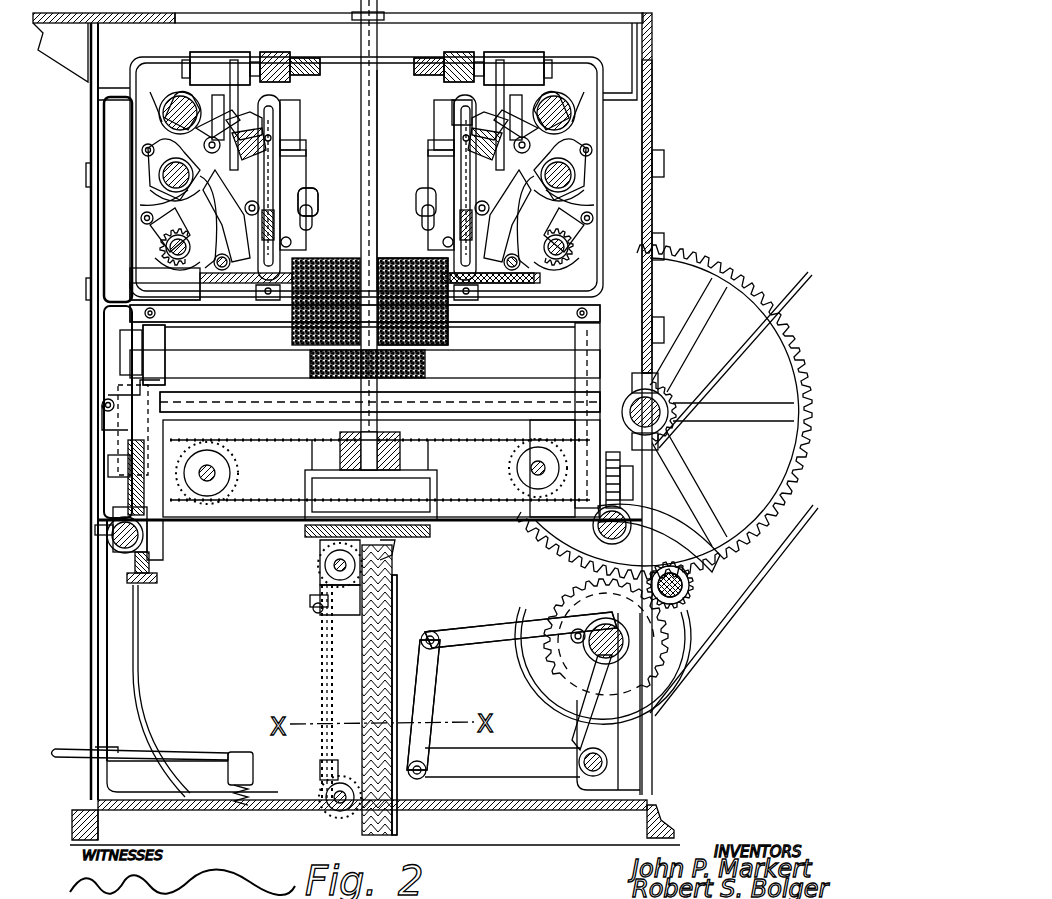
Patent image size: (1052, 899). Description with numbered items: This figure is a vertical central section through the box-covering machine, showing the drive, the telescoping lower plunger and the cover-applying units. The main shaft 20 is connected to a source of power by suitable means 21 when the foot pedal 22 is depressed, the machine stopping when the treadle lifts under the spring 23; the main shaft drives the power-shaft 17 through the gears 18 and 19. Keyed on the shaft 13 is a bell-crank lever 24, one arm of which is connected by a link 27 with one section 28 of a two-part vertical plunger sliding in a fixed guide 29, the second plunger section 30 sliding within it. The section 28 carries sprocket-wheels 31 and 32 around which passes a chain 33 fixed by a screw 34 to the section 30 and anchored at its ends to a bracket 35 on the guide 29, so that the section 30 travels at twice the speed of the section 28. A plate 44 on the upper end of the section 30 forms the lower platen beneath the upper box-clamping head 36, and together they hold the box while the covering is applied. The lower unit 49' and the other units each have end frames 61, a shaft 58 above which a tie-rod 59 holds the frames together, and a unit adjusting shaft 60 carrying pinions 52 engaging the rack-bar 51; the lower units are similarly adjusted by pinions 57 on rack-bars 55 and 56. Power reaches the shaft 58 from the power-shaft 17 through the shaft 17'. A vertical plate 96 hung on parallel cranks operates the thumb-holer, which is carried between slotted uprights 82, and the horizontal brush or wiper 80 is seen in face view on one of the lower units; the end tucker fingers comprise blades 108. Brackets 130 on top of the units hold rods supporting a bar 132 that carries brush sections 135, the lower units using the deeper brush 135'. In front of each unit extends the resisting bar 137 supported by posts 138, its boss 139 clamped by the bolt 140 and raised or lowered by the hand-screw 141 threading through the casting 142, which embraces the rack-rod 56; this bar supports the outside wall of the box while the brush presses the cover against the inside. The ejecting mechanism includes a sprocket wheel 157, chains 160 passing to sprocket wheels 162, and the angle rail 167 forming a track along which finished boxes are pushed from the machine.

The brackets 130 is at (228, 62).
The bar 132 is at (278, 53).
The brush sections 135 is at (367, 52).
The tie-rod 59 is at (172, 98).
The shaft 58 is at (168, 175).
The vertical plate 96 is at (190, 193).
The pinions 52 is at (152, 245).
The unit adjusting shaft 60 is at (180, 258).
The rack-bar 51 is at (165, 296).
The resisting bar 137 is at (306, 150).
The slotted uprights 82 is at (304, 197).
The end tucker blades 108 is at (306, 220).
The end frame 61 is at (290, 243).
The shaft 17' is at (400, 180).
The lower unit brush 135' is at (413, 290).
The power-shaft 17 is at (679, 390).
The gear 18 is at (795, 460).
The horizontal brush or wiper 80 is at (412, 365).
The lower cover-applying unit 49' is at (104, 355).
The bolt 140 is at (106, 400).
The boss 139 is at (133, 437).
The posts 138 is at (130, 470).
The rack-bar 56 is at (122, 538).
The casting 142 is at (150, 541).
The hand-screw 141 is at (143, 565).
The box-clamping head 36 is at (312, 450).
The sprocket wheel 157 is at (235, 483).
The chains 160 is at (440, 436).
The sprocket wheel 162 is at (512, 482).
The angle rail 167 is at (465, 522).
The pinions 57 is at (632, 514).
The rack-bar 55 is at (628, 534).
The shaft 13 is at (698, 576).
The gear 19 is at (674, 618).
The connecting means 21 is at (574, 652).
The main shaft 20 is at (602, 656).
The second bell-crank lever 24 is at (482, 622).
The link 27 is at (426, 678).
The sprocket wheel 32 is at (338, 562).
The platen plate 44 is at (388, 552).
The fixed guide 29 is at (396, 598).
The plunger section 28 is at (390, 619).
The bracket 35 is at (314, 606).
The second plunger section 30 is at (340, 622).
The chain 33 is at (326, 697).
The foot pedal 22 is at (208, 752).
The spring 23 is at (233, 796).
The screw 34 is at (326, 772).
The sprocket wheel 31 is at (333, 806).